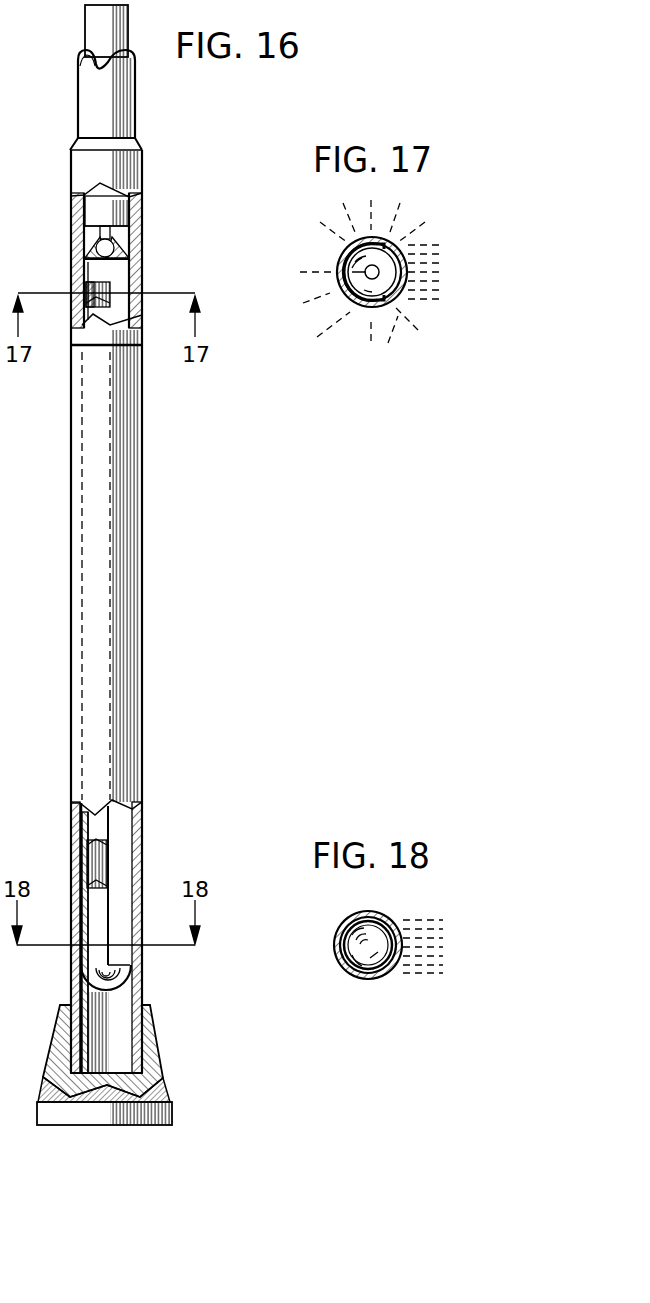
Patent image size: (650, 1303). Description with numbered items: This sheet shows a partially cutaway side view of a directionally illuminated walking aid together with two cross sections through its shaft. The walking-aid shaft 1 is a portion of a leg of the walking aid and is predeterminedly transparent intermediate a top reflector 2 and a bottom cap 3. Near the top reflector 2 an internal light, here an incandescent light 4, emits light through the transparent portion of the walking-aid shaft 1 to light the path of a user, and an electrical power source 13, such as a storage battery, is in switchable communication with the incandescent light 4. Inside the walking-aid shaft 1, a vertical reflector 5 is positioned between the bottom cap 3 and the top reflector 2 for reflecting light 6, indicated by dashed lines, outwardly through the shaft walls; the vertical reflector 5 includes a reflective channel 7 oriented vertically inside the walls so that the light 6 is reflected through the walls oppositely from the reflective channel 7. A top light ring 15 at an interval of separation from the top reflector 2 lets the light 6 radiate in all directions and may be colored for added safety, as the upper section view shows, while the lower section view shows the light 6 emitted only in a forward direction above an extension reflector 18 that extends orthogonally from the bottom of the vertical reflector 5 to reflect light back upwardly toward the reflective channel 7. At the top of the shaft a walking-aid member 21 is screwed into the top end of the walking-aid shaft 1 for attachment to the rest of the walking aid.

In FIG. 16, the walking-aid shaft 1 is at (120, 667).
In FIG. 17, the walking-aid shaft 1 is at (350, 245).
In FIG. 18, the walking-aid shaft 1 is at (346, 921).
In FIG. 16, the top reflector 2 is at (136, 232).
In FIG. 17, the top reflector 2 is at (347, 292).
In FIG. 16, the bottom cap 3 is at (158, 1046).
In FIG. 16, the incandescent light 4 is at (114, 252).
In FIG. 17, the incandescent light 4 is at (343, 262).
In FIG. 16, the vertical reflector 5 is at (95, 826).
In FIG. 17, the vertical reflector 5 is at (347, 275).
In FIG. 18, the vertical reflector 5 is at (345, 945).
In FIG. 17, the light 6 is at (396, 328).
In FIG. 18, the light 6 is at (424, 964).
In FIG. 16, the reflective channel 7 is at (93, 276).
In FIG. 18, the reflective channel 7 is at (342, 960).
In FIG. 16, the electrical power source 13 is at (105, 207).
In FIG. 16, the top light ring 15 is at (100, 347).
In FIG. 16, the extension reflector 18 is at (124, 978).
In FIG. 18, the extension reflector 18 is at (352, 974).
In FIG. 16, the walking-aid member 21 is at (120, 121).